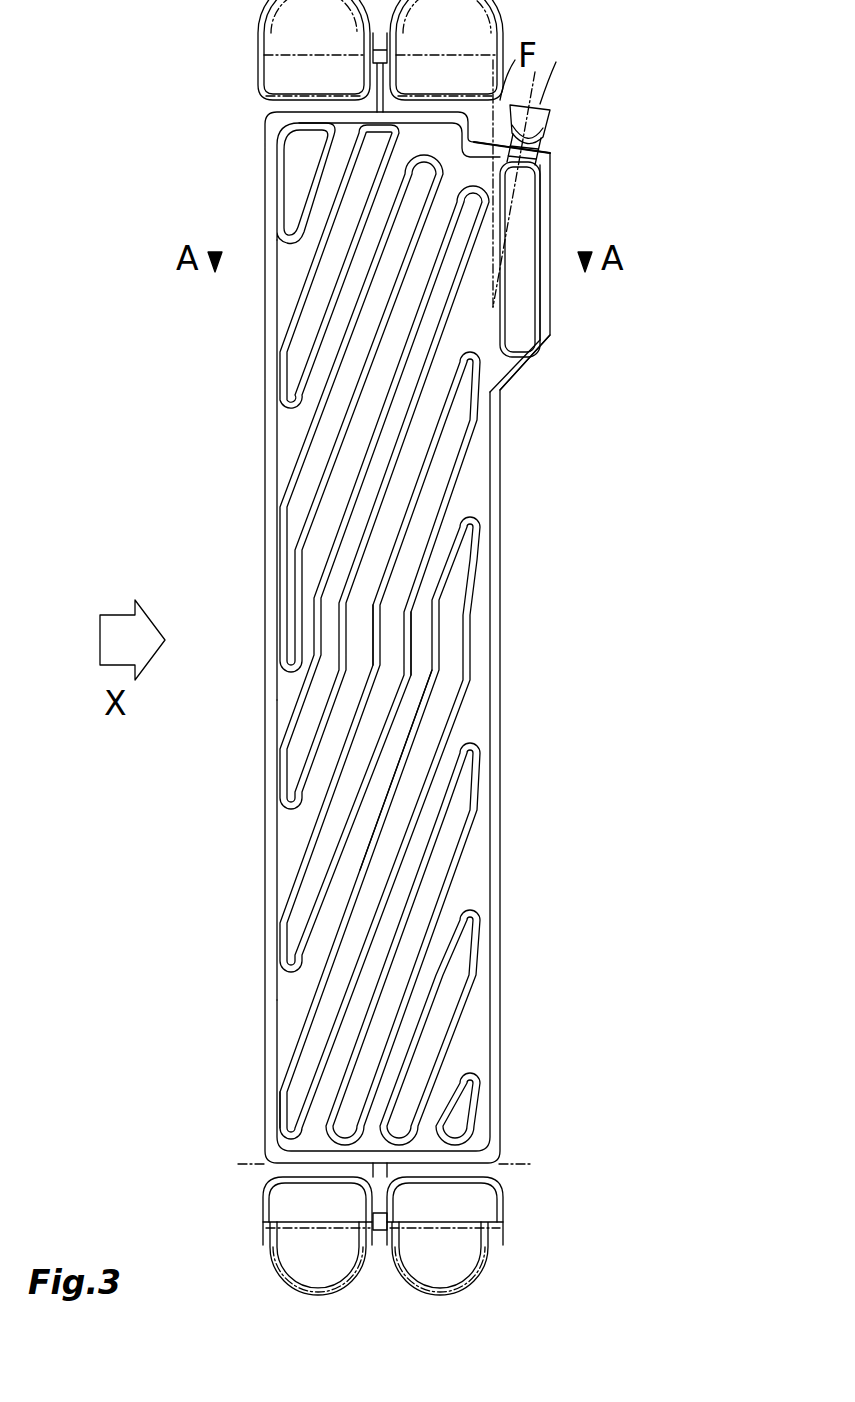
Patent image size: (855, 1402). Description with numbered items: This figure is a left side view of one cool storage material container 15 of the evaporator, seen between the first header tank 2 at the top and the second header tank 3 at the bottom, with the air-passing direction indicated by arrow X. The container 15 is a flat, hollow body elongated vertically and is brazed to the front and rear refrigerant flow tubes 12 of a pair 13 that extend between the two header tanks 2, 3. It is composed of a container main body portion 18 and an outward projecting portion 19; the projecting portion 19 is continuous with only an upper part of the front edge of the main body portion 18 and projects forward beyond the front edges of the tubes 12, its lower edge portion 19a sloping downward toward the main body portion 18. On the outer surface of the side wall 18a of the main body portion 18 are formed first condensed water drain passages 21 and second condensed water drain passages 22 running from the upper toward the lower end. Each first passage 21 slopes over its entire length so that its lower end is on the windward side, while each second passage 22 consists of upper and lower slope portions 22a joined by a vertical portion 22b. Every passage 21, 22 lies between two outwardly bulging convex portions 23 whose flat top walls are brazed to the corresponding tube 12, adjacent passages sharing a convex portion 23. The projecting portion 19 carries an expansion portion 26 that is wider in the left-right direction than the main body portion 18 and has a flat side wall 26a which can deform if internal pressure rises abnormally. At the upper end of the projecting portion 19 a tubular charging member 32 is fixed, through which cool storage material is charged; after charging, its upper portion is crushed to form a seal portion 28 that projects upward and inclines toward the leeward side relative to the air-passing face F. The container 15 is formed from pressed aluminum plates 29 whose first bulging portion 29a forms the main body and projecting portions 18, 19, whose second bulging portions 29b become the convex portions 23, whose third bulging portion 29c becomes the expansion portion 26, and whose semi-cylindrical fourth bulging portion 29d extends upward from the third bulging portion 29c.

The first header tank 2 is at (257, 55).
The second header tank 3 is at (262, 1237).
The refrigerant flow tube 12 is at (262, 1170).
The pair of refrigerant flow tubes 13 is at (262, 114).
The cool storage material container 15 is at (597, 517).
The container main body portion 18 is at (280, 1012).
The side wall 18a is at (290, 850).
The outward projecting portion 19 is at (540, 337).
The lower edge portion 19a is at (510, 370).
The first condensed water drain passage 21 is at (332, 332).
The second condensed water drain passage 22 is at (355, 430).
The slope portion 22a is at (432, 470).
The vertical portion 22b is at (330, 645).
The convex portion 23 is at (355, 527).
The expansion portion 26 is at (522, 198).
The side wall of expansion portion 26a is at (522, 282).
The seal portion 28 is at (540, 107).
The aluminum plate 29 is at (495, 1072).
The first bulging portion 29a is at (310, 1110).
The second bulging portion 29b is at (352, 940).
The third bulging portion 29c is at (532, 222).
The fourth bulging portion 29d is at (540, 155).
The charging member 32 is at (546, 135).